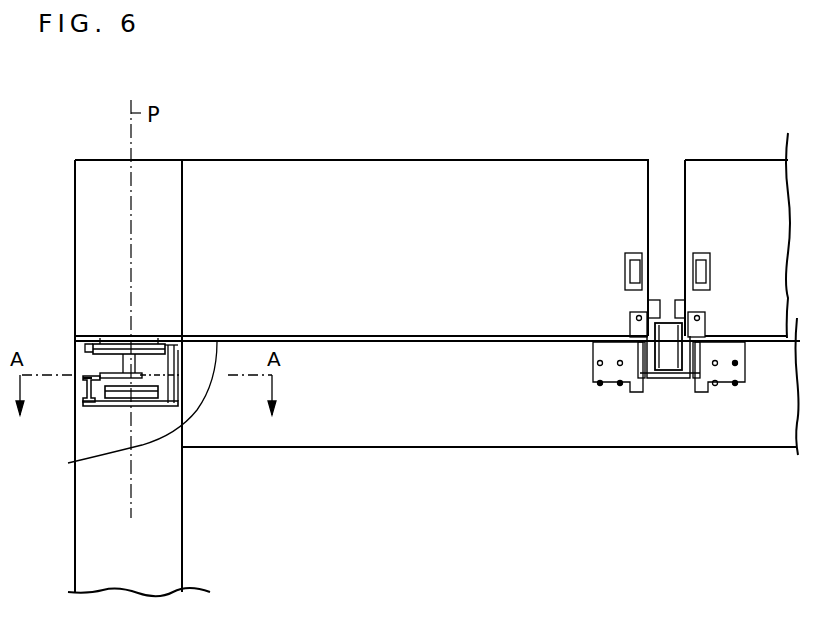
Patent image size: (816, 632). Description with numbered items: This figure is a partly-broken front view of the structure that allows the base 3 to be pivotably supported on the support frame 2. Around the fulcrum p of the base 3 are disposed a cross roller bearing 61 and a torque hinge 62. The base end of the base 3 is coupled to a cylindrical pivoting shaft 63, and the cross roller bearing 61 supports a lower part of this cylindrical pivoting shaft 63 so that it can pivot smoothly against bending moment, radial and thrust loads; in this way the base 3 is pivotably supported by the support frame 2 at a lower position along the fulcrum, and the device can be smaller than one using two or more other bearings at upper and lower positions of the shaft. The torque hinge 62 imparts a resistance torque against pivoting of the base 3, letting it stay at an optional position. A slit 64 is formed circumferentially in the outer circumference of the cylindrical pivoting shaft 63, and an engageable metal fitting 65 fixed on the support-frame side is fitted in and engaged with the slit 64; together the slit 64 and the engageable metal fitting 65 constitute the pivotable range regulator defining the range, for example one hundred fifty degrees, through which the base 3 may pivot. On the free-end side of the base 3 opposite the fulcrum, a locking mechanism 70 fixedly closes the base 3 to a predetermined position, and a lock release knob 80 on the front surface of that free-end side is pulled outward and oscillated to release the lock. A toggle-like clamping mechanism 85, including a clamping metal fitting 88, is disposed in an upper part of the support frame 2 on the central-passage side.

The support frame 2 is at (426, 447).
The base 3 is at (392, 160).
The cross roller bearing 61 is at (120, 345).
The torque hinge 62 is at (125, 397).
The cylindrical pivoting shaft 63 is at (180, 360).
The slit 64 is at (135, 373).
The engageable metal fitting 65 is at (110, 370).
The locking mechanism 70 is at (656, 290).
The lock release knob 80 is at (628, 270).
The clamping mechanism 85 is at (666, 386).
The clamping metal fitting 88 is at (630, 322).